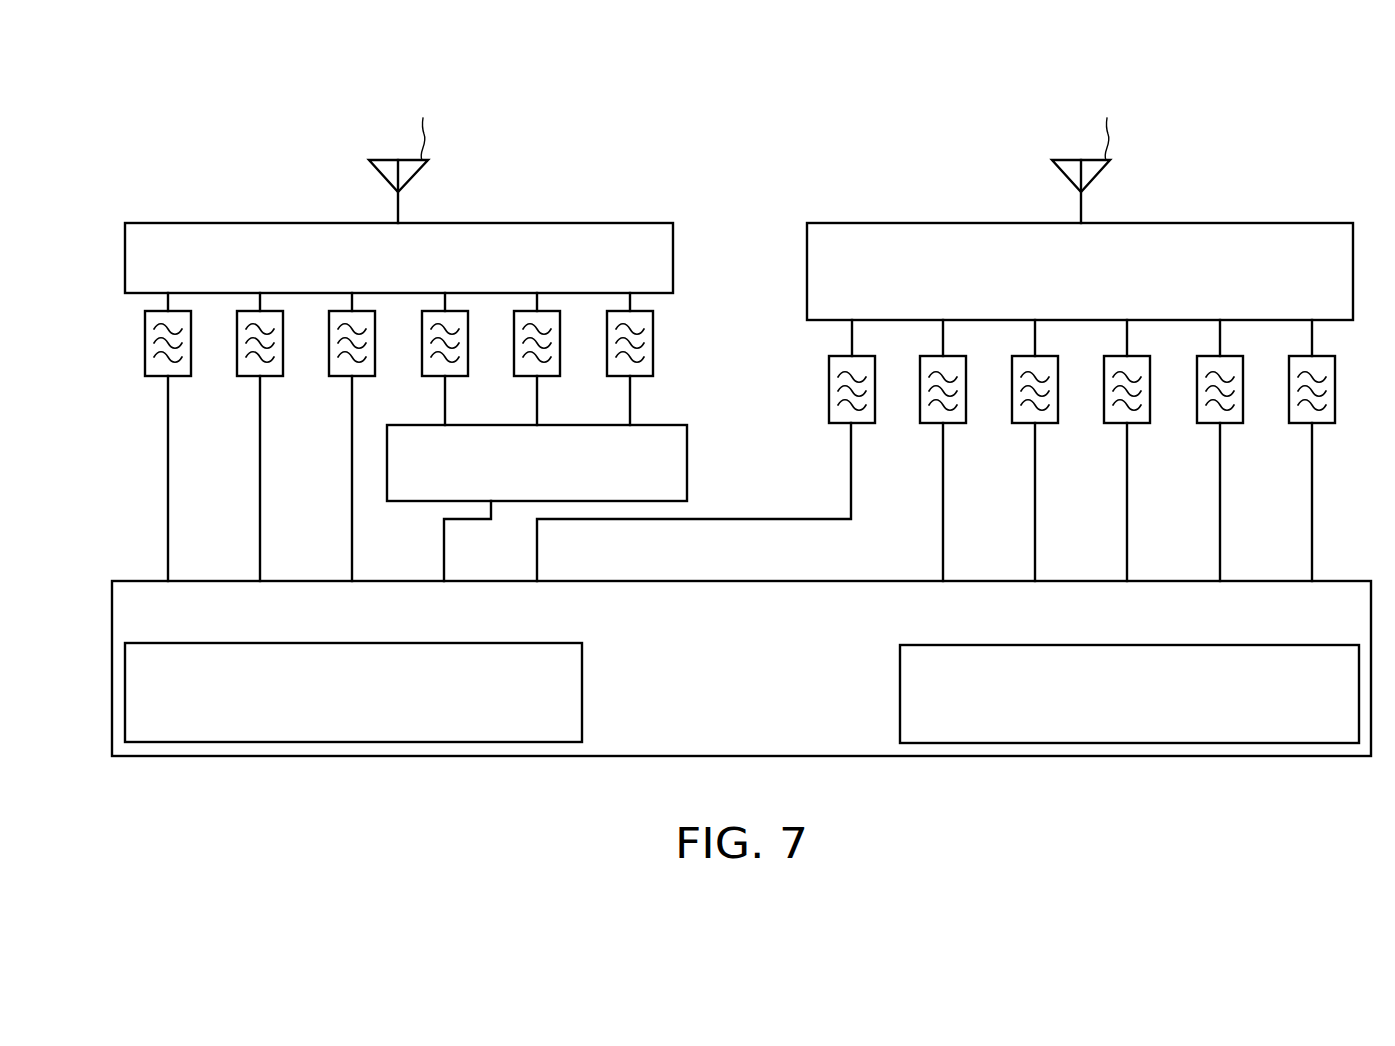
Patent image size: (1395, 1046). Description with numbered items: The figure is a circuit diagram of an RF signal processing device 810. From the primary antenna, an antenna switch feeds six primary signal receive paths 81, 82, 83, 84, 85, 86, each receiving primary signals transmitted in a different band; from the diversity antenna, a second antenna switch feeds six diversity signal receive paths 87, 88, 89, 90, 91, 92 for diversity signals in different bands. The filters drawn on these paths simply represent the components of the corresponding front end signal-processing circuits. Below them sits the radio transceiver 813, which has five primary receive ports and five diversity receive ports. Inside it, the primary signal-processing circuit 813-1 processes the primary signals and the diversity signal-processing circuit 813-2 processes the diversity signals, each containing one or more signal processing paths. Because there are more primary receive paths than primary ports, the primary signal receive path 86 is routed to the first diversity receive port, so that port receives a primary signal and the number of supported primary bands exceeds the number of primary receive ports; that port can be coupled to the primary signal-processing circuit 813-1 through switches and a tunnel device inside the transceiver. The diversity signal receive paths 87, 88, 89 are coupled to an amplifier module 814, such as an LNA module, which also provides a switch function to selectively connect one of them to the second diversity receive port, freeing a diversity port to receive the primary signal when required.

The RF signal processing device 810 is at (170, 108).
The primary signal receive path 81 is at (1312, 470).
The primary signal receive path 82 is at (1220, 470).
The primary signal receive path 83 is at (1127, 470).
The primary signal receive path 84 is at (1035, 470).
The primary signal receive path 85 is at (943, 470).
The primary signal receive path 86 is at (852, 470).
The diversity signal receive path 87 is at (630, 400).
The diversity signal receive path 88 is at (537, 400).
The diversity signal receive path 89 is at (445, 400).
The diversity signal receive path 90 is at (352, 400).
The diversity signal receive path 91 is at (260, 400).
The diversity signal receive path 92 is at (168, 400).
The amplifier module 814 is at (687, 463).
The radio transceiver 813 is at (763, 656).
The primary signal-processing circuit 813-1 is at (1130, 743).
The diversity signal-processing circuit 813-2 is at (354, 742).